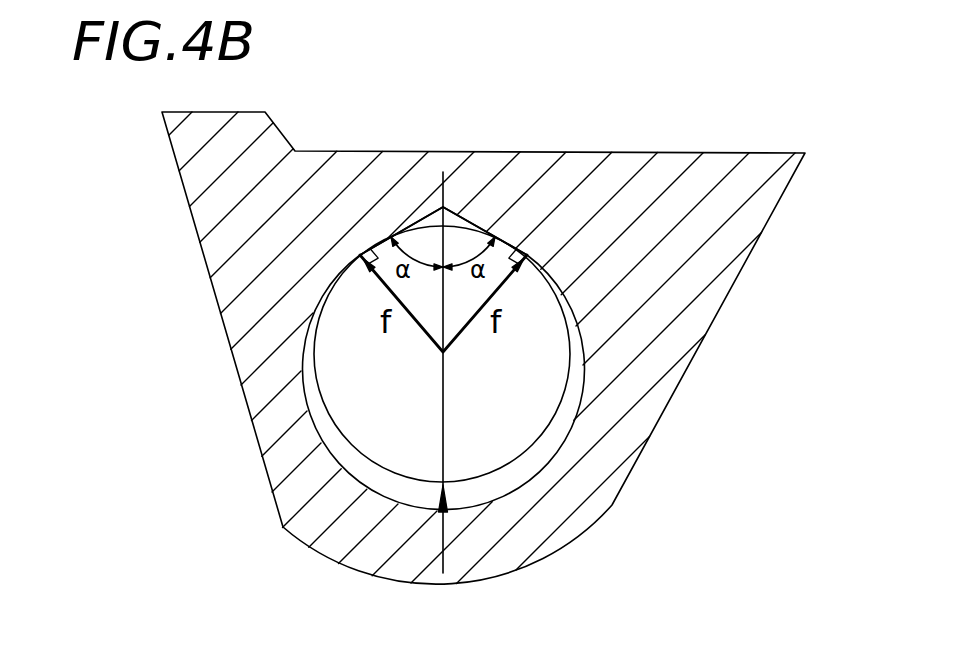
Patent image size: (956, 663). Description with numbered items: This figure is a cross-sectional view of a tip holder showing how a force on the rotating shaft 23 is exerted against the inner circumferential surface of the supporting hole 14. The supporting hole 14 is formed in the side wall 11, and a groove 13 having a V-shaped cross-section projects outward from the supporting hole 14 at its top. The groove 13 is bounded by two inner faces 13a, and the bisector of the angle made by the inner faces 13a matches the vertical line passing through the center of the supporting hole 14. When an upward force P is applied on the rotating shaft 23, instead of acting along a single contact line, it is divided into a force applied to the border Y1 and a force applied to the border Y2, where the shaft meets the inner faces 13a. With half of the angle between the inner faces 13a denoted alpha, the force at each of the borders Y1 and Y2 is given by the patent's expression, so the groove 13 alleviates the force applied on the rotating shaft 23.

The side wall 11 is at (643, 357).
The groove 13 is at (448, 209).
The inner faces 13a is at (448, 210).
The supporting hole 14 is at (530, 463).
The rotating shaft 23 is at (367, 422).
The border Y1 is at (527, 255).
The border Y2 is at (360, 255).
The upward force P is at (453, 375).